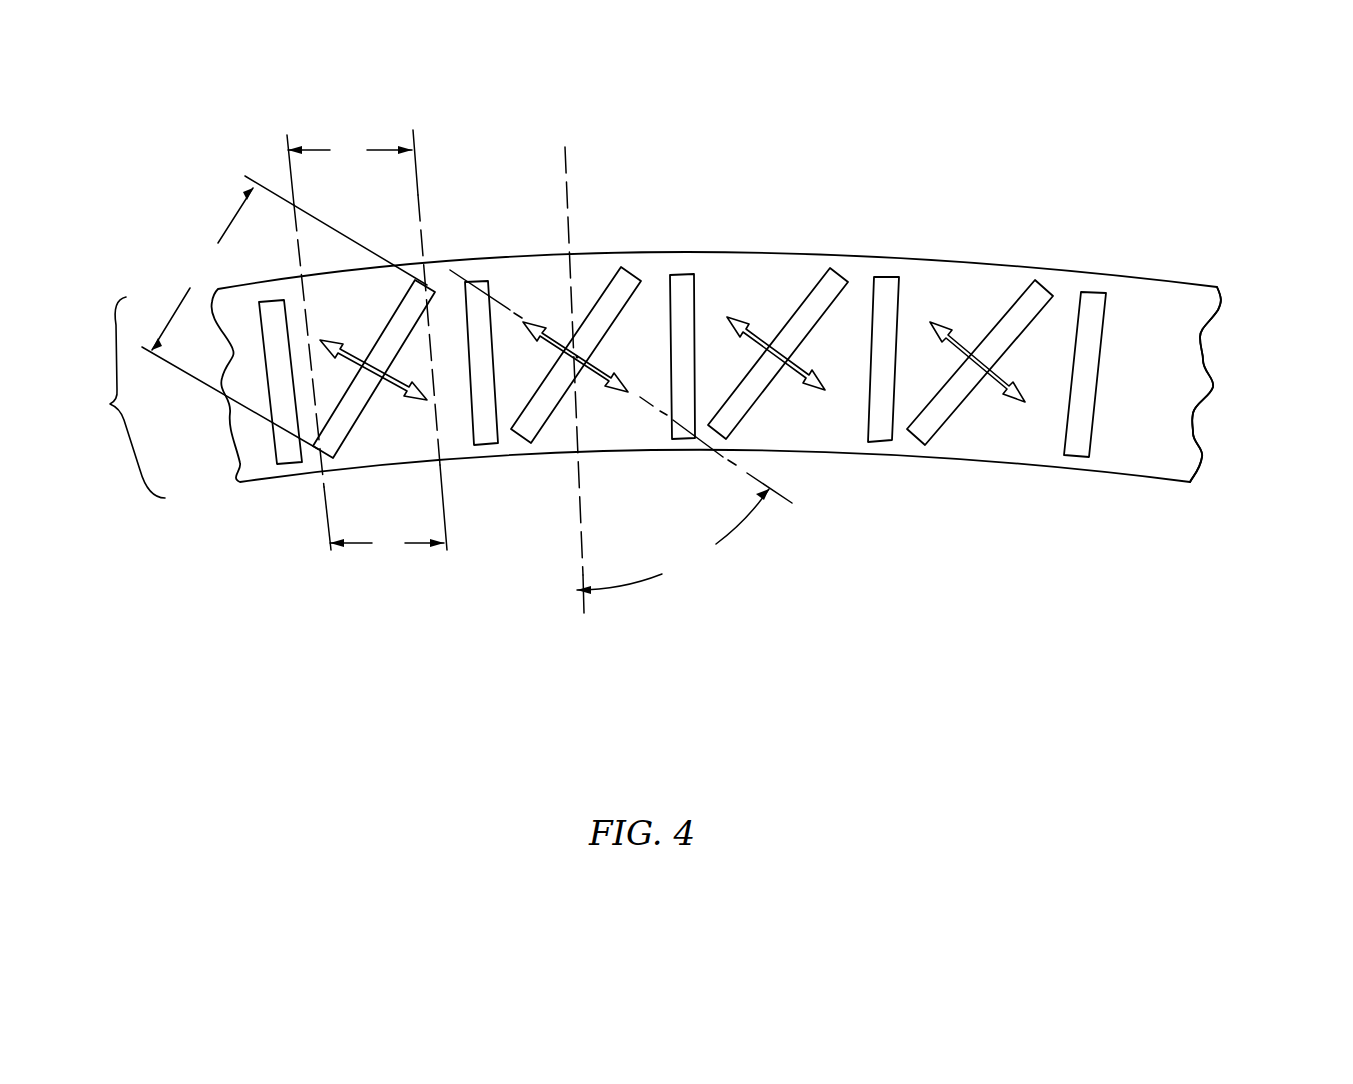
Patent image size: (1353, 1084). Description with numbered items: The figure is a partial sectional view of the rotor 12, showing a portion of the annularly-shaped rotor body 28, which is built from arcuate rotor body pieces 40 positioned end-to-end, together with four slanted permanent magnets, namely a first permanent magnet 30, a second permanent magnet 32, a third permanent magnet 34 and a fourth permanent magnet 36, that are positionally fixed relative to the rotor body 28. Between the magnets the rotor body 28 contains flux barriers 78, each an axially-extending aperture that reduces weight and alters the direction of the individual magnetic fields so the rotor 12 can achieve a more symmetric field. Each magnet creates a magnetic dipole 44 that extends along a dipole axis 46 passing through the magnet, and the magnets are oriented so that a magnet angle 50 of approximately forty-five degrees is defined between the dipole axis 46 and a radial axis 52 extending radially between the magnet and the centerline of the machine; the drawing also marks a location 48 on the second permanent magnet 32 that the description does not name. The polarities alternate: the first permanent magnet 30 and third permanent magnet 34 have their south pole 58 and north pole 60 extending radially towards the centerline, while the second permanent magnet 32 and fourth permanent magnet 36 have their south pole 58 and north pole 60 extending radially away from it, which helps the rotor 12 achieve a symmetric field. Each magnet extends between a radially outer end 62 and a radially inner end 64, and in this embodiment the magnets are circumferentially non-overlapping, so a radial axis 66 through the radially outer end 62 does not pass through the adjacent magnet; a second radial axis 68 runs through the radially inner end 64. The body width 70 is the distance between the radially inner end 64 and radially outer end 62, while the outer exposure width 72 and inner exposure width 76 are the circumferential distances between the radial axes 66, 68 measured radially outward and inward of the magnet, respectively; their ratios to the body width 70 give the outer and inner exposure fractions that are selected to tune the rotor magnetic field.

The rotor 12 is at (125, 397).
The rotor body 28 is at (1140, 282).
The first permanent magnet 30 is at (390, 318).
The second permanent magnet 32 is at (603, 287).
The third permanent magnet 34 is at (800, 297).
The fourth permanent magnet 36 is at (1017, 297).
The rotor body piece 40 is at (1193, 312).
The magnetic dipole 44 is at (388, 380).
The dipole axis 46 is at (787, 497).
The center point 48 is at (577, 357).
The magnet angle 50 is at (673, 541).
The radial axis 52 is at (584, 613).
The south pole 58 is at (323, 338).
The north pole 60 is at (512, 310).
The radially outer end 62 is at (430, 275).
The radially inner end 64 is at (318, 470).
The radial axis 66 is at (445, 522).
The radial axis 68 is at (327, 532).
The body width 70 is at (284, 312).
The outer exposure width 72 is at (350, 151).
The inner exposure width 76 is at (387, 544).
The flux barrier 78 is at (476, 280).